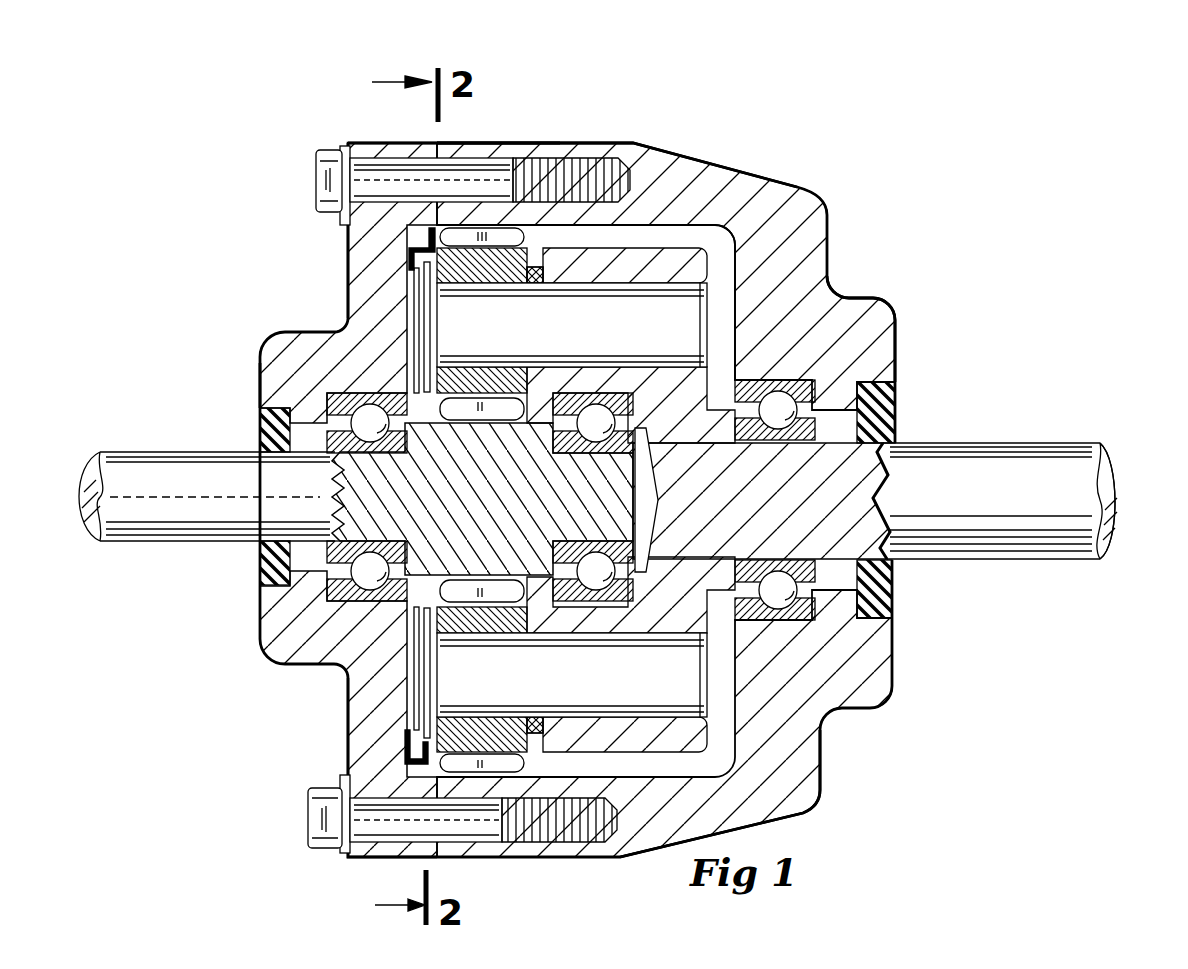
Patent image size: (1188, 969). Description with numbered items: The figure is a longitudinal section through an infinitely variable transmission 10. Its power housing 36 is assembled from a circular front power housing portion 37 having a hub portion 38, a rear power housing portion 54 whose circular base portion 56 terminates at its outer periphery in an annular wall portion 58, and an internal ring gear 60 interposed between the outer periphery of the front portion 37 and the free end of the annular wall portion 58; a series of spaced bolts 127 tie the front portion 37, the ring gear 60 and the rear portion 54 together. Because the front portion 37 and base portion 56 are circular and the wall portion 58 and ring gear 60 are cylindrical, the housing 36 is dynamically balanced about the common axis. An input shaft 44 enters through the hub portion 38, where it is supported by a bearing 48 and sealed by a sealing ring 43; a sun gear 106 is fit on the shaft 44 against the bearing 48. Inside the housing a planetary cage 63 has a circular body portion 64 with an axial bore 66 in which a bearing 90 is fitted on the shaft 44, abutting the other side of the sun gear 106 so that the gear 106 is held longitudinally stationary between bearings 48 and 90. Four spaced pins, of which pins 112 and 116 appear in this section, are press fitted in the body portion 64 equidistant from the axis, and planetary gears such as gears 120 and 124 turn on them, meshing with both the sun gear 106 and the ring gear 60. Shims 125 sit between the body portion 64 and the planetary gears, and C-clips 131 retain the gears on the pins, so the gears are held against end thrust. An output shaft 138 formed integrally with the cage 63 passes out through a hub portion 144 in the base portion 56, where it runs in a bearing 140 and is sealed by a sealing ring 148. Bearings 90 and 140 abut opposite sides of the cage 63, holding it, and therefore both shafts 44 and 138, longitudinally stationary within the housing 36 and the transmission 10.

The infinitely variable transmission 10 is at (596, 312).
The power housing 36 is at (594, 471).
The front power housing portion 37 is at (370, 466).
The hub portion 38 is at (310, 500).
The sealing ring 43 is at (237, 501).
The input shaft 44 is at (197, 461).
The bearing 48 is at (301, 510).
The rear power housing portion 54 is at (687, 500).
The circular base portion 56 is at (756, 793).
The annular wall portion 58 is at (617, 146).
The internal ring gear 60 is at (498, 116).
The planetary cage 63 is at (650, 442).
The circular body portion 64 is at (619, 261).
The axial bore 66 is at (614, 497).
The bearing 90 is at (670, 500).
The sun gear 106 is at (482, 499).
The pin 112 is at (572, 325).
The pin 116 is at (572, 675).
The planetary gear 120 is at (344, 752).
The planetary gear 124 is at (348, 246).
The shims 125 is at (522, 501).
The bolts 127 is at (416, 513).
The C-clips 131 is at (345, 500).
The output shaft 138 is at (901, 462).
The bearing 140 is at (791, 527).
The hub portion 144 is at (907, 329).
The sealing ring 148 is at (910, 500).